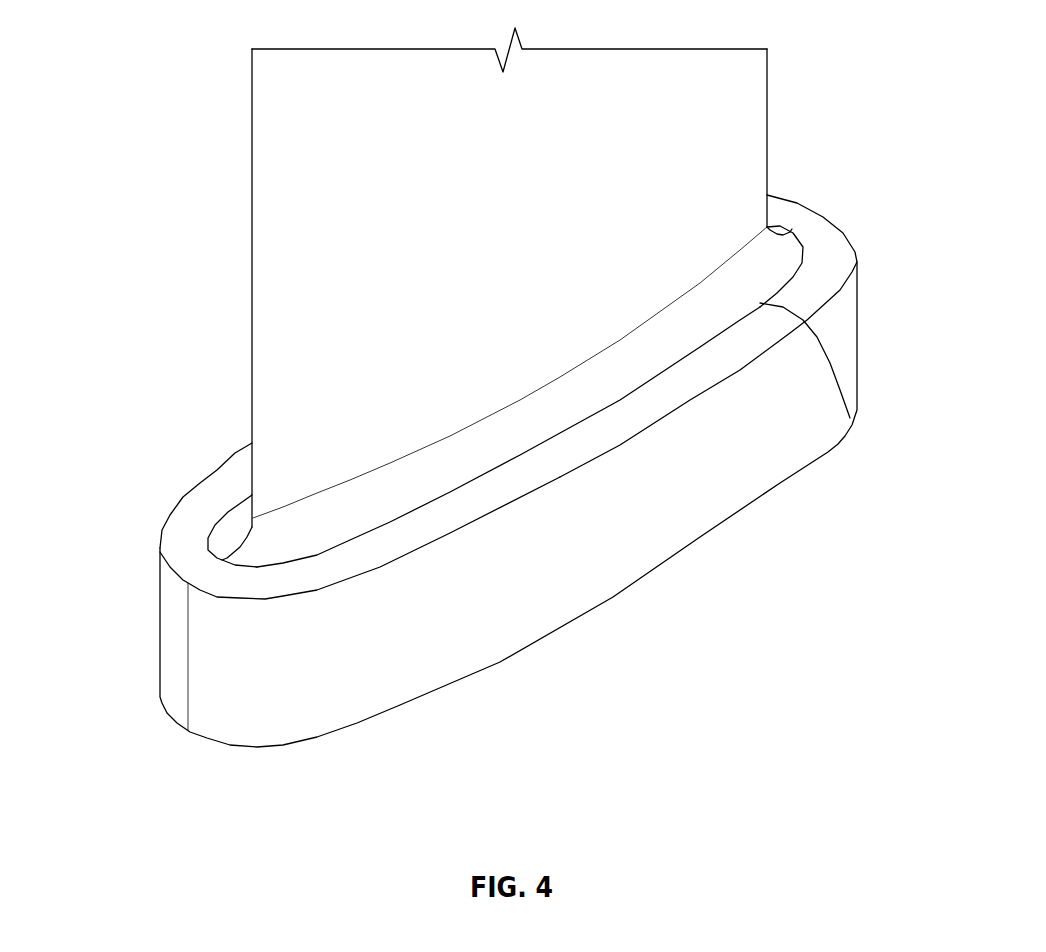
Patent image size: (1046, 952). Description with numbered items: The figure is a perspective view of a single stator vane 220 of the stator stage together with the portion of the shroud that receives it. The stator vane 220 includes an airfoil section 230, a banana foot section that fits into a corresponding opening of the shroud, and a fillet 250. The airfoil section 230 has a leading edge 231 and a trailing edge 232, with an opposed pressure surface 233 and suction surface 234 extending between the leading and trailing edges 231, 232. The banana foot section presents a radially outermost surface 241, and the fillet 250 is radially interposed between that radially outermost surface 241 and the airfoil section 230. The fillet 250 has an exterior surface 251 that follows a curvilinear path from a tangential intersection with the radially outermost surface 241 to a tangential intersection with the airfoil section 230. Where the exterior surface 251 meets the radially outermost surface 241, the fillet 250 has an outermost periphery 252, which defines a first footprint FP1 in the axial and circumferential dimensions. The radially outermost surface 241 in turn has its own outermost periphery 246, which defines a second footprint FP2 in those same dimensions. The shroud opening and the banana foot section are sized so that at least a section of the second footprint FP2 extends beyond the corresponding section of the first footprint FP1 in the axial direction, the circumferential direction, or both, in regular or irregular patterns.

The stator vane 220 is at (252, 134).
The airfoil section 230 is at (533, 190).
The leading edge 231 is at (252, 182).
The trailing edge 232 is at (767, 89).
The pressure surface 233 is at (725, 192).
The suction surface 234 is at (252, 49).
The radially outermost surface 241 is at (192, 533).
The outermost periphery 246 is at (264, 600).
The fillet 250 is at (687, 325).
The exterior surface 251 is at (237, 520).
The outermost periphery 252 is at (215, 559).
The first footprint FP1 is at (825, 348).
The second footprint FP2 is at (823, 306).